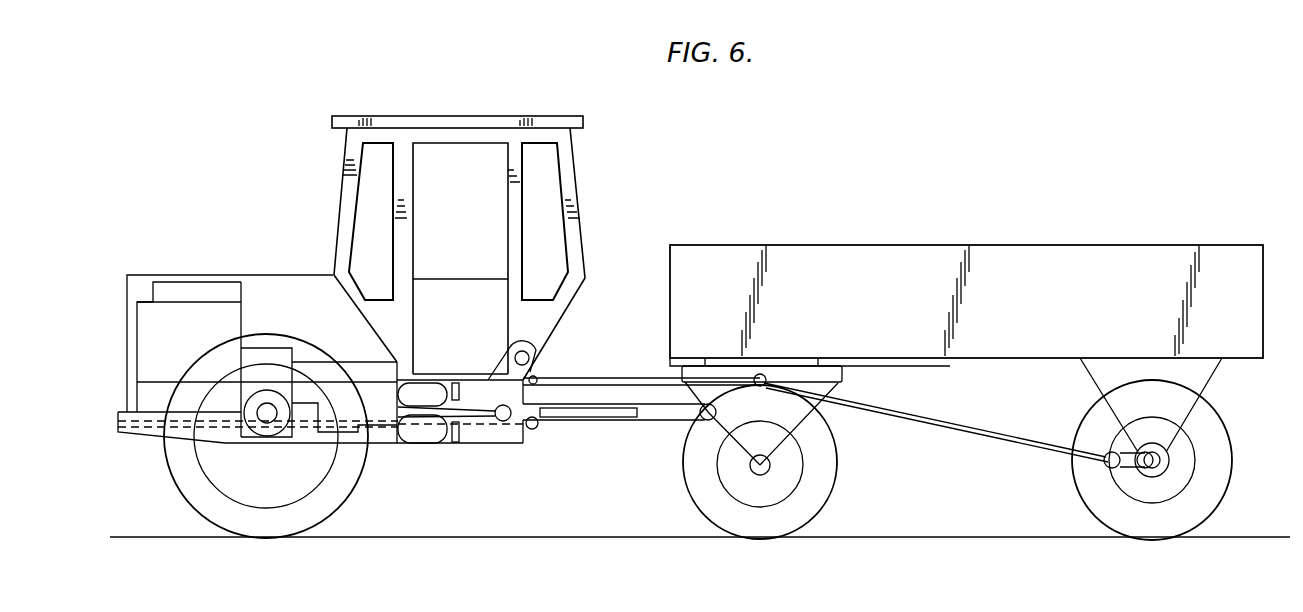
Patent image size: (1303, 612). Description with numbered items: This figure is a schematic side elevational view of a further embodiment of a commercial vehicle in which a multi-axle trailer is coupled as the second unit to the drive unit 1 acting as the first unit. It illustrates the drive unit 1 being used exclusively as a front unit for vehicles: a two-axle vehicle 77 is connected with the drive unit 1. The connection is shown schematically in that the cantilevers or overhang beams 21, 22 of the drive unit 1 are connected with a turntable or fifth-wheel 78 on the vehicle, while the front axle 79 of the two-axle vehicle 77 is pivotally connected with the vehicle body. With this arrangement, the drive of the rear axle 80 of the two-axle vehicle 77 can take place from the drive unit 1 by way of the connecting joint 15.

The drive unit 1 is at (292, 222).
The connecting joint 15 is at (536, 378).
The cantilever or overhang beam 21 is at (567, 422).
The cantilever or overhang beam 22 is at (567, 422).
The two-axle vehicle 77 is at (1008, 222).
The turntable or fifth-wheel 78 is at (845, 384).
The front axle 79 is at (755, 467).
The rear axle 80 is at (1145, 463).